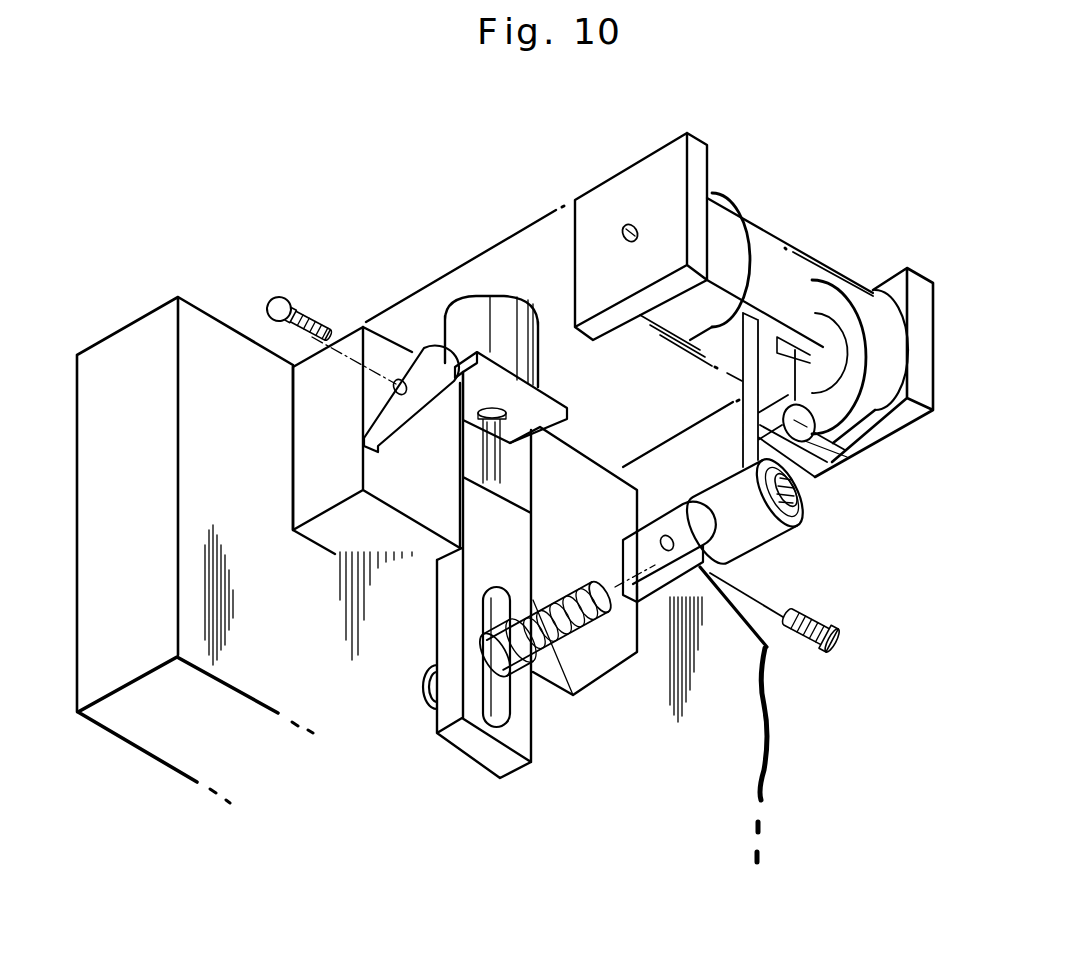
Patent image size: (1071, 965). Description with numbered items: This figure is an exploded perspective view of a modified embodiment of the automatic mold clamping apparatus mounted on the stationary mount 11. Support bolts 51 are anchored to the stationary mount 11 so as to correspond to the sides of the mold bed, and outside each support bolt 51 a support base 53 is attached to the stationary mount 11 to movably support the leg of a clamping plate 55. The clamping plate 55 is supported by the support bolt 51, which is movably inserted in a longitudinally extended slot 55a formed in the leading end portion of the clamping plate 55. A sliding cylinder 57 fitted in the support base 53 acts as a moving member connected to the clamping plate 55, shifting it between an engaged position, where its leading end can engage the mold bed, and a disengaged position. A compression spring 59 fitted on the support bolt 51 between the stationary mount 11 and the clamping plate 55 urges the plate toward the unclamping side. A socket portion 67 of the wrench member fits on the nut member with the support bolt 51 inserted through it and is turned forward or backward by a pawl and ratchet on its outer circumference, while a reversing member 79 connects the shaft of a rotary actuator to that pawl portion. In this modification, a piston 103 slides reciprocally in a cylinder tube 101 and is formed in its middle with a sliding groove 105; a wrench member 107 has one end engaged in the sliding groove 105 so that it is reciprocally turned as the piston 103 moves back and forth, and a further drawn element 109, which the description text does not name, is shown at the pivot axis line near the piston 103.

The stationary mount 11 is at (216, 352).
The support base 53 is at (337, 440).
The sliding cylinder 57 is at (496, 323).
The clamping plate 55 is at (534, 737).
The slot 55a is at (493, 712).
The compression spring 59 is at (422, 700).
The support bolt 51 is at (578, 630).
The wrench member 107 is at (840, 588).
The socket portion 67 is at (800, 507).
The cylinder tube 101 is at (720, 208).
The piston 103 is at (760, 287).
The sliding groove 105 is at (797, 333).
The reversing member 79 is at (847, 457).
The pivot axis 109 is at (707, 362).